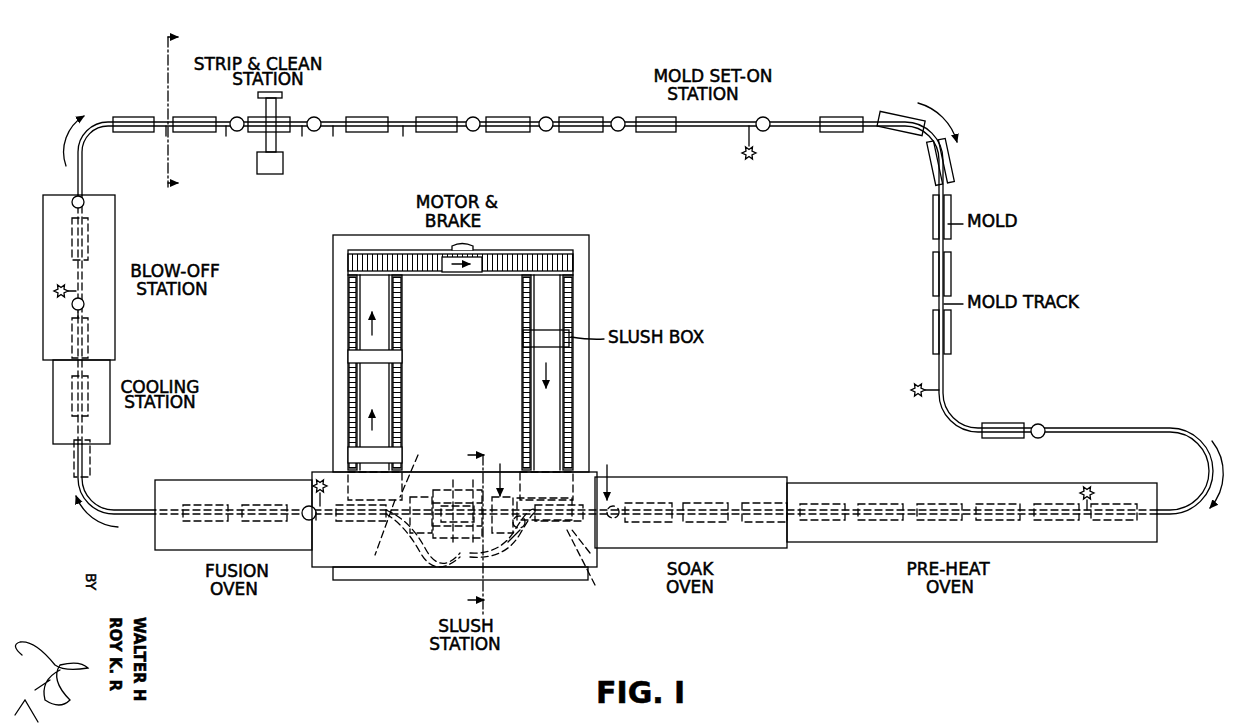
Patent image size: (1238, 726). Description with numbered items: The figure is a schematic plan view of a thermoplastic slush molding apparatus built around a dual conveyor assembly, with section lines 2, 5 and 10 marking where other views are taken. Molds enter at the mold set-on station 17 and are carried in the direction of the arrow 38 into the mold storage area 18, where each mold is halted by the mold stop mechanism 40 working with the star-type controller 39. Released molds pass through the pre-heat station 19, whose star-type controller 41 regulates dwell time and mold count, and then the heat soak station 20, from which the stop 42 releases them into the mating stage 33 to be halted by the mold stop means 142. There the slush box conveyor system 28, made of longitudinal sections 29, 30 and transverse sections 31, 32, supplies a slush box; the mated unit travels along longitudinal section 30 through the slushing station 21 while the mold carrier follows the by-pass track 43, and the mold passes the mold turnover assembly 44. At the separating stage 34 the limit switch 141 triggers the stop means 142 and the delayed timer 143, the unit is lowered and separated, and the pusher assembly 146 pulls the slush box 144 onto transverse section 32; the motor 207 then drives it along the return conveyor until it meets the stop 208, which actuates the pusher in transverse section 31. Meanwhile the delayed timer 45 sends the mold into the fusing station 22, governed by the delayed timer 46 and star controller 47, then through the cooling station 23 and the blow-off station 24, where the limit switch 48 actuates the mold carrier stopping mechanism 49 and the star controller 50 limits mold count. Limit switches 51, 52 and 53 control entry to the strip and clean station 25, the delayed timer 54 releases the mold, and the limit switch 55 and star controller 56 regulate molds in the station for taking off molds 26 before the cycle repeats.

The section line 2- 2 is at (186, 112).
The section line 5- 5 is at (555, 469).
The section line 10- 10 is at (464, 526).
The mold set-on station 17 is at (700, 128).
The mold storage area 18 is at (935, 192).
The pre-heat station 19 is at (1030, 545).
The heat soak station 20 is at (705, 488).
The slushing station 21 is at (410, 565).
The fusing station 22 is at (220, 490).
The cooling station 23 is at (103, 420).
The blow-off station 24 is at (108, 250).
The strip and clean station 25 is at (273, 125).
The station for taking off molds 26 is at (520, 131).
The slush box conveyor system 28 is at (376, 248).
The longitudinal section 29 is at (492, 278).
The longitudinal section 30 is at (508, 520).
The transverse section 31 is at (521, 390).
The transverse section 32 is at (402, 386).
The mating stage 33 is at (592, 553).
The separating stage 34 is at (395, 520).
The arrow 38 is at (945, 125).
The star-type controller 39 is at (910, 388).
The mold stop mechanism 40 is at (1042, 425).
The star-type controller 41 is at (1081, 486).
The stop 42 is at (620, 500).
The by-pass track 43 is at (500, 560).
The mold turnover assembly 44 is at (440, 565).
The delayed timer 45 is at (320, 520).
The delayed timer 46 is at (300, 510).
The star controller 47 is at (315, 481).
The limit switch 48 is at (90, 306).
The mold carrier stopping mechanism 49 is at (70, 306).
The star controller 50 is at (54, 289).
The limit switch 51 is at (81, 194).
The limit switch 52 is at (165, 132).
The limit switch 53 is at (226, 137).
The delayed timer 54 is at (304, 137).
The limit switch 55 is at (336, 126).
The star controller 56 is at (756, 158).
The limit switch 141 is at (520, 505).
The mold stop means 142 is at (524, 533).
The delayed timer 143 is at (512, 548).
The slush box 144 is at (357, 455).
The pusher assembly 146 is at (380, 406).
The motor 207 is at (467, 246).
The stop 208 is at (576, 263).